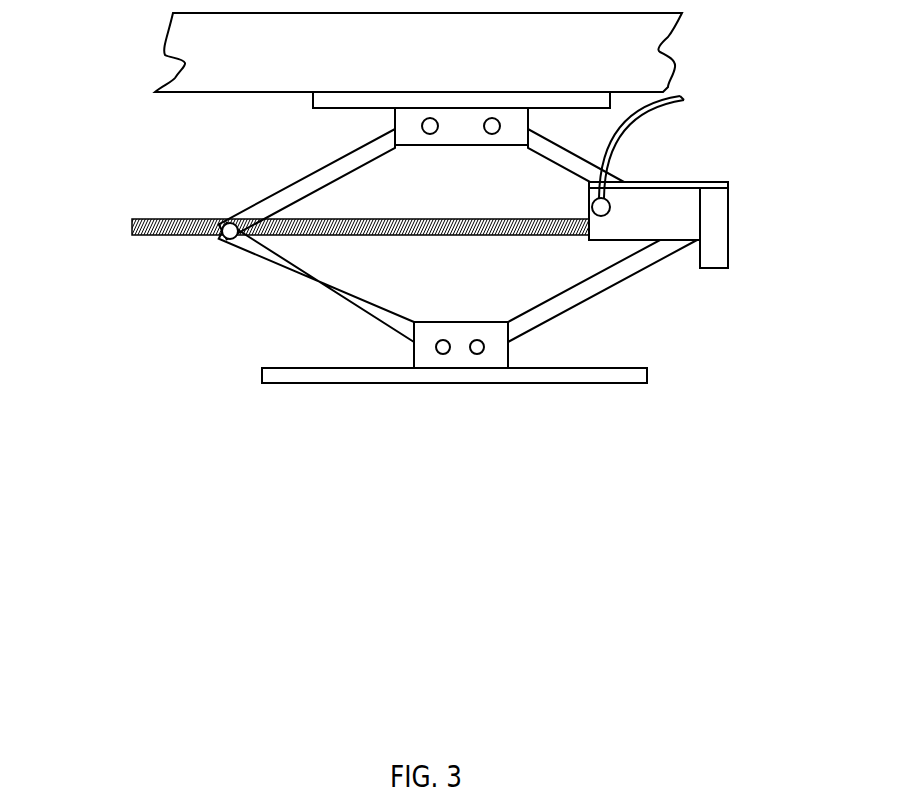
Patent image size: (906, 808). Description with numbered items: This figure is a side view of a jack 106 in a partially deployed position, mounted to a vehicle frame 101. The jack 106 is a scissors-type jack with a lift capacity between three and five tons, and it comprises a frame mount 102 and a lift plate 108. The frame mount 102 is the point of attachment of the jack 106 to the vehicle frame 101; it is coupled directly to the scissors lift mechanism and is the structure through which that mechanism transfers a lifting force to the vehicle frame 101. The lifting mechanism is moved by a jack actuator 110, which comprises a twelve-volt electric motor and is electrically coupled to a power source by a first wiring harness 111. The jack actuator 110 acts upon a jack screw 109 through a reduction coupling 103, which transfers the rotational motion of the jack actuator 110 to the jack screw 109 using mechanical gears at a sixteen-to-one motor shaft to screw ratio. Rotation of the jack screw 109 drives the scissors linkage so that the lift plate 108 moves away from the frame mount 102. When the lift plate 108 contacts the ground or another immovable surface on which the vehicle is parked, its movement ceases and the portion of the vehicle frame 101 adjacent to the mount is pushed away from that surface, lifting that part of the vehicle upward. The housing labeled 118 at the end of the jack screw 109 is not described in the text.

The vehicle frame 101 is at (340, 56).
The frame mount 102 is at (340, 106).
The reduction coupling 103 is at (717, 238).
The jack 106 is at (122, 92).
The lift plate 108 is at (632, 381).
The jack screw 109 is at (167, 220).
The jack actuator 110 is at (728, 180).
The first wiring harness 111 is at (632, 132).
The drive nut housing 118 is at (670, 227).